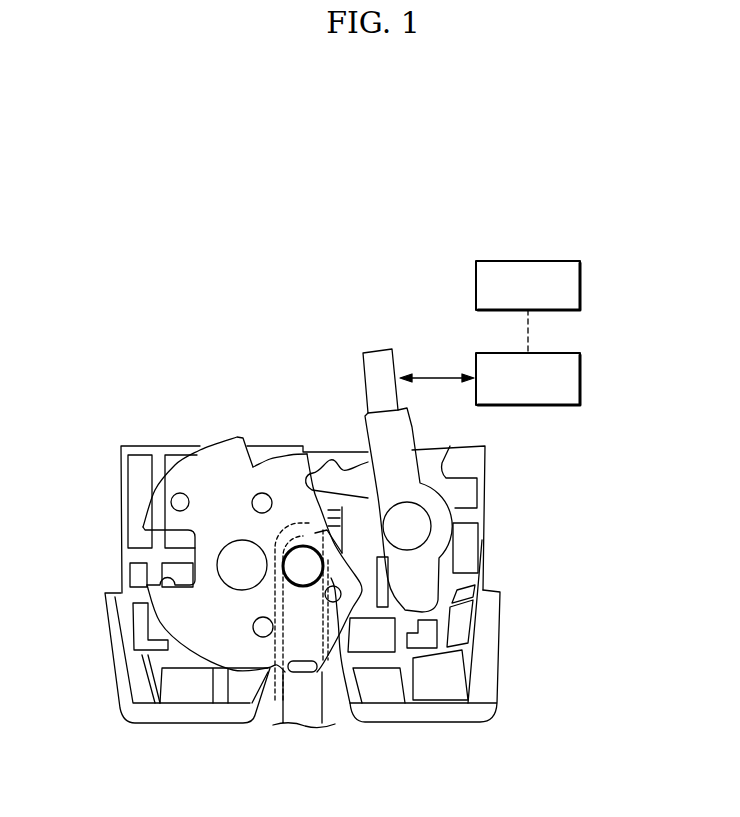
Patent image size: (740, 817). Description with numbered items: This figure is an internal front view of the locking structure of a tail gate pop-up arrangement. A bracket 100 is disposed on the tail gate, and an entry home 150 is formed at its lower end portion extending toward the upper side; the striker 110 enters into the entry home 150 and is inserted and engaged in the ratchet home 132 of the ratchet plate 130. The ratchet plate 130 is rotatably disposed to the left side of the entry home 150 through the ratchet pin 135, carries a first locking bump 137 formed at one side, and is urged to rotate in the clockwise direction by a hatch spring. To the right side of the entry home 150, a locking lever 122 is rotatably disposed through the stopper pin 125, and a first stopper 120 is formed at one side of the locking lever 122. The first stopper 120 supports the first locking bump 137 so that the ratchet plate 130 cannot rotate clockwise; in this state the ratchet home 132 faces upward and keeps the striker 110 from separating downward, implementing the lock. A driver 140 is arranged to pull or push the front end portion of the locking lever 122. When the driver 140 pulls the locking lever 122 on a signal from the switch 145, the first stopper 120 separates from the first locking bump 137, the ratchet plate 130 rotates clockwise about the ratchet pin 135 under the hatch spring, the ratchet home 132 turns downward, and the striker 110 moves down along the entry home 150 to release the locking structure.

The bracket 100 is at (440, 678).
The striker 110 is at (303, 571).
The first stopper 120 is at (313, 477).
The locking lever 122 is at (397, 447).
The stopper pin 125 is at (417, 520).
The ratchet plate 130 is at (200, 653).
The ratchet home 132 is at (287, 533).
The ratchet pin 135 is at (233, 563).
The first locking bump 137 is at (300, 472).
The driver 140 is at (583, 380).
The switch 145 is at (583, 283).
The entry home 150 is at (340, 690).